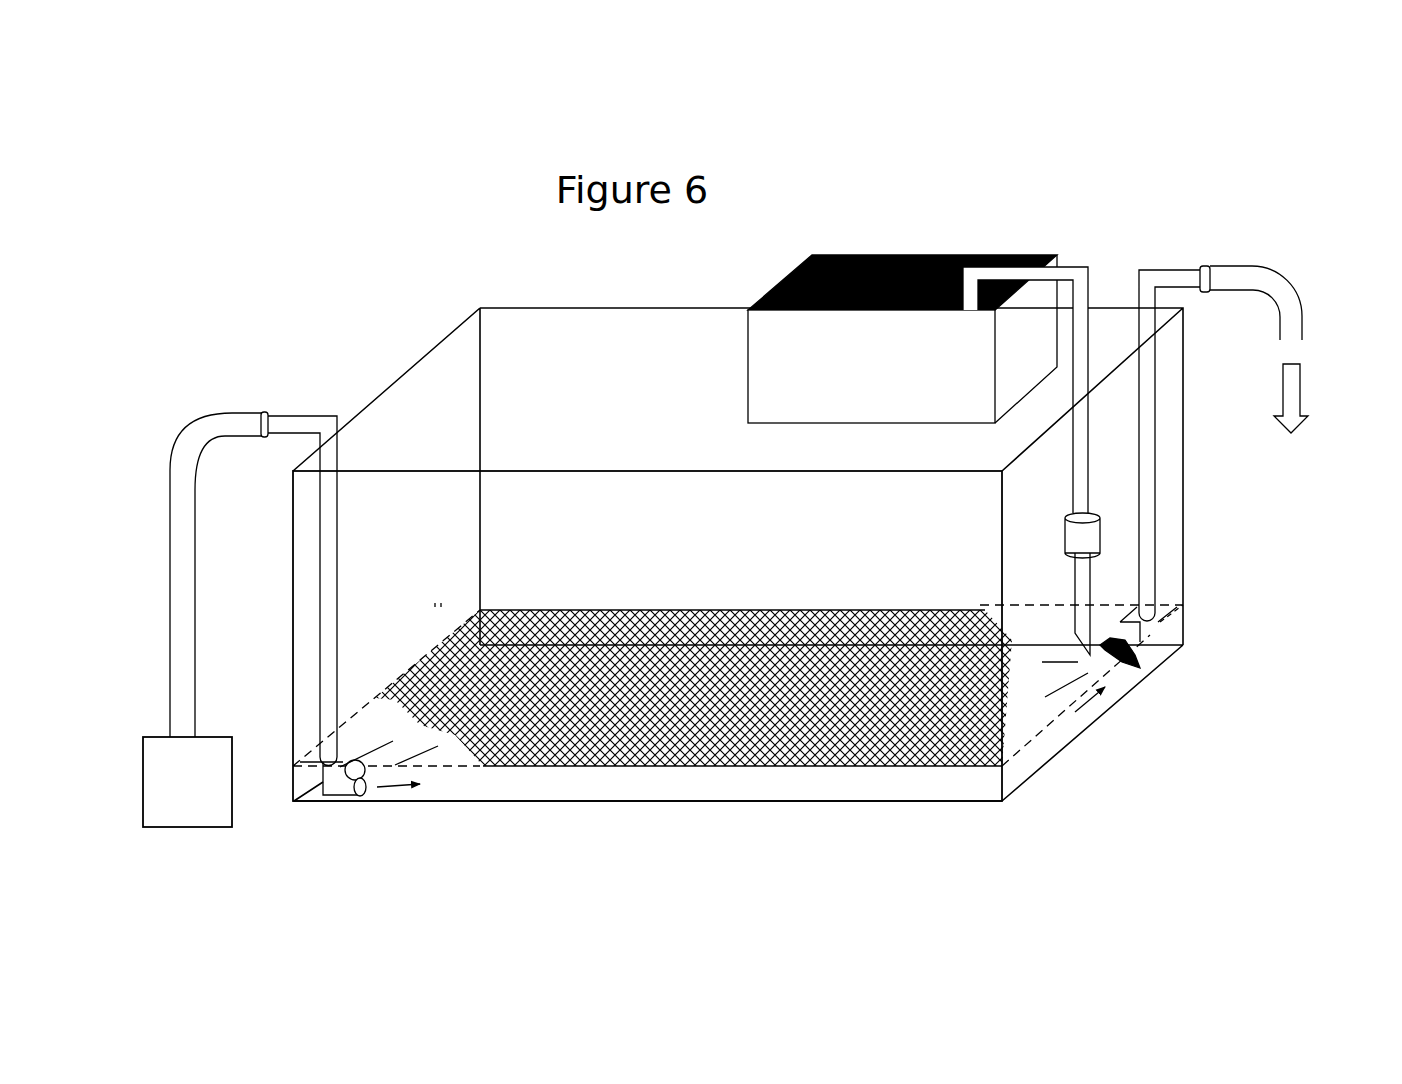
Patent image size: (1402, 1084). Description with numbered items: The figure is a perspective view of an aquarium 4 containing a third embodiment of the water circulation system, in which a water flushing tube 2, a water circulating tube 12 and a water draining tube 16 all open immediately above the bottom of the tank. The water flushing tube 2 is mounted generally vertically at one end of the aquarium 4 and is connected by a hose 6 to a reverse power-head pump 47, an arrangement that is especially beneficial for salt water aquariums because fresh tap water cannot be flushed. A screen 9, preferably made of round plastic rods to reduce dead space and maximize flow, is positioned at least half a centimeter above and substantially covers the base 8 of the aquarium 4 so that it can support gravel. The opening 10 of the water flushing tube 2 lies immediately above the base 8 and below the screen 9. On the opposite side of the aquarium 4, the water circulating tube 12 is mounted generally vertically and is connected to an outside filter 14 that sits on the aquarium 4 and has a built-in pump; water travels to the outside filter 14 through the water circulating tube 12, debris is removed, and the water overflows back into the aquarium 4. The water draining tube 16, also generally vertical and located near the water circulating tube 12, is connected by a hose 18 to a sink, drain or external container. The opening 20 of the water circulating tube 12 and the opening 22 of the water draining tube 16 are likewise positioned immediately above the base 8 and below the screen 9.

The water flushing tube 2 is at (308, 416).
The aquarium 4 is at (725, 805).
The hose 6 is at (195, 423).
The base 8 is at (900, 801).
The screen 9 is at (600, 733).
The opening of water flushing tube 10 is at (362, 793).
The water circulating tube 12 is at (1087, 268).
The outside filter 14 is at (924, 255).
The water draining tube 16 is at (1193, 268).
The hose 18 is at (1302, 307).
The opening of water circulation tube 20 is at (1085, 676).
The opening of water draining tube 22 is at (1157, 652).
The reverse power-head pump 47 is at (203, 838).